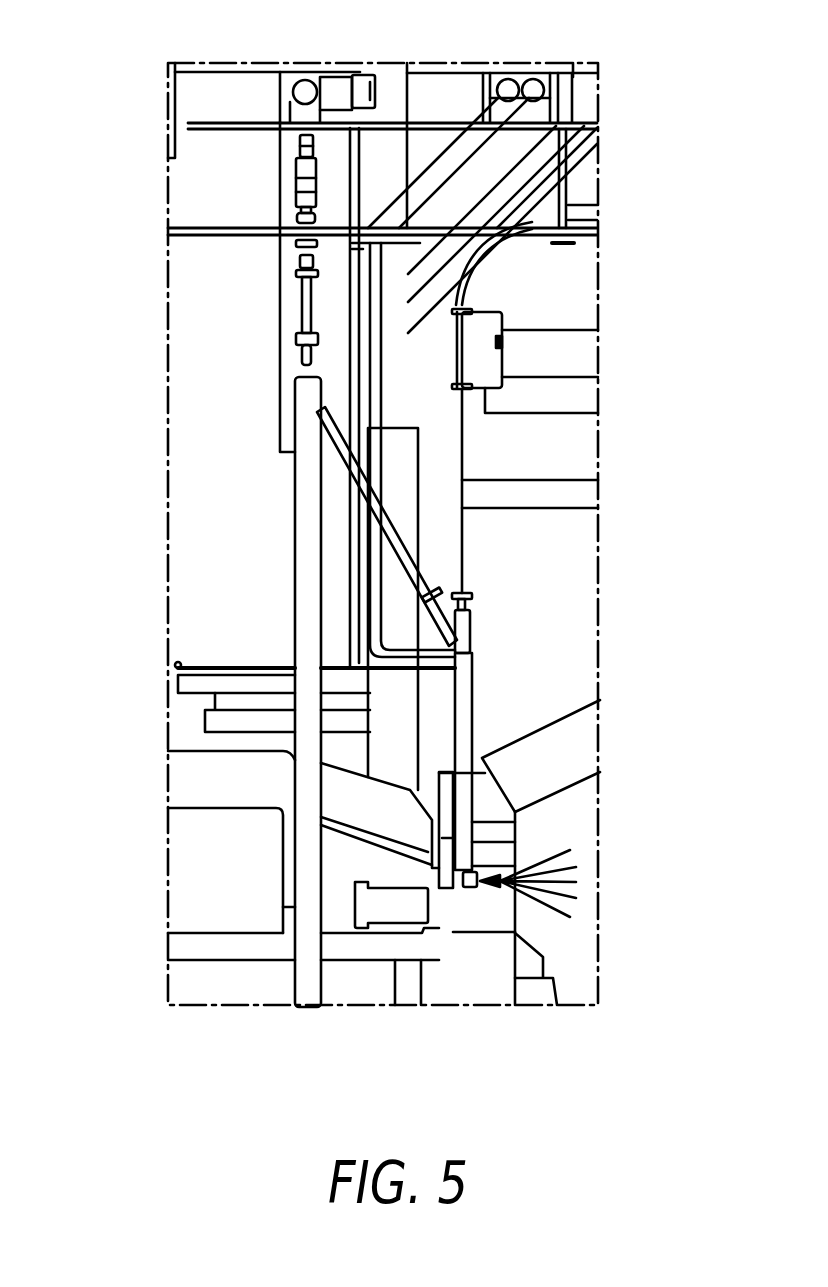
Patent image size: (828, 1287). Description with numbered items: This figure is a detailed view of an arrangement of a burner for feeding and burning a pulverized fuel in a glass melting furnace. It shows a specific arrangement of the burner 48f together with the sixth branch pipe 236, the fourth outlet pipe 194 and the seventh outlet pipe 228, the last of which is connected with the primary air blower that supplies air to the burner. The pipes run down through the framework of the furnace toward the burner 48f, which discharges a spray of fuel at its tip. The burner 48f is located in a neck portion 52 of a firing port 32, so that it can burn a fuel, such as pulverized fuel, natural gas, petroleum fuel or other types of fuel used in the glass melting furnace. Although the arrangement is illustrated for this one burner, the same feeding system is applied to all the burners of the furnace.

The seventh outlet pipe 228 is at (306, 92).
The sixth branch pipe 236 is at (395, 535).
The fourth outlet pipe 194 is at (467, 538).
The burner 48f is at (517, 822).
The firing port 32 is at (203, 875).
The neck portion 52 is at (462, 907).